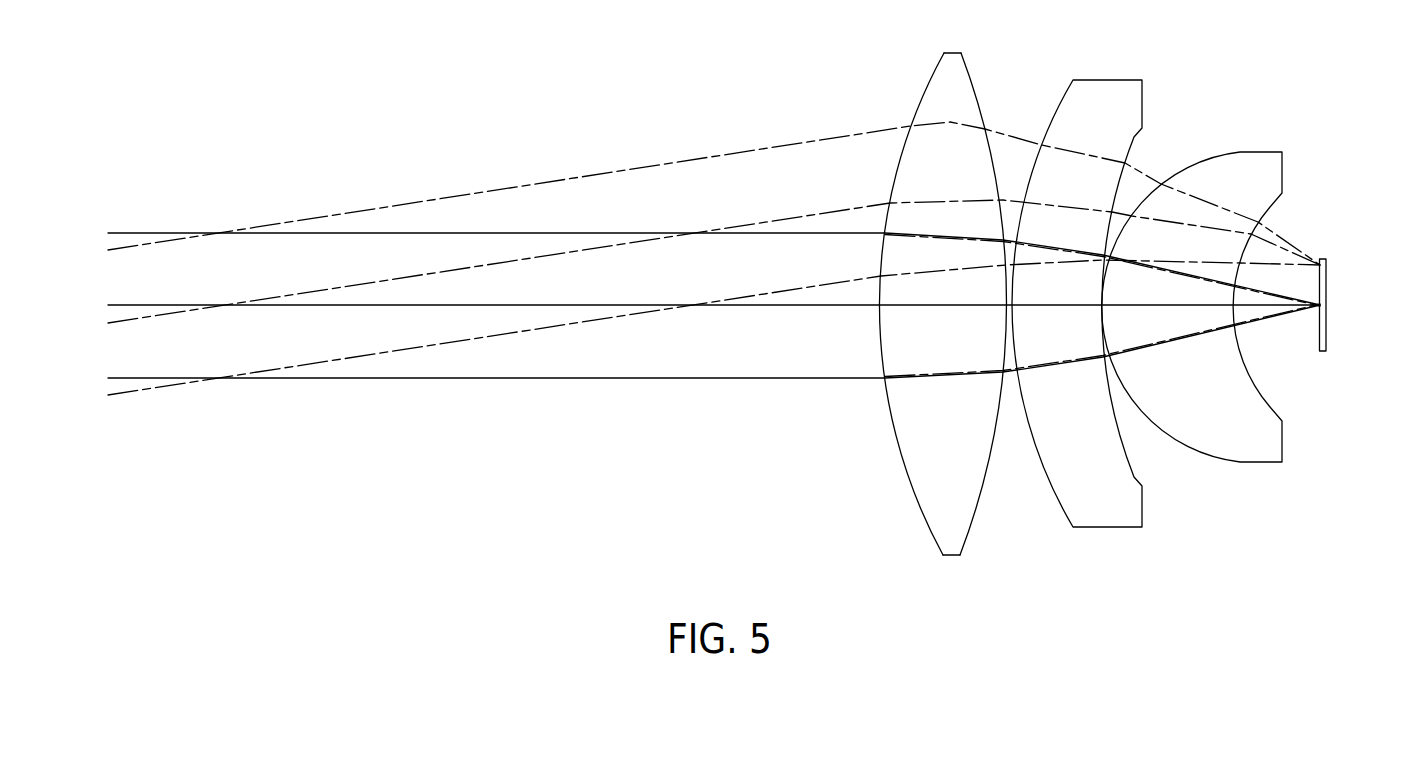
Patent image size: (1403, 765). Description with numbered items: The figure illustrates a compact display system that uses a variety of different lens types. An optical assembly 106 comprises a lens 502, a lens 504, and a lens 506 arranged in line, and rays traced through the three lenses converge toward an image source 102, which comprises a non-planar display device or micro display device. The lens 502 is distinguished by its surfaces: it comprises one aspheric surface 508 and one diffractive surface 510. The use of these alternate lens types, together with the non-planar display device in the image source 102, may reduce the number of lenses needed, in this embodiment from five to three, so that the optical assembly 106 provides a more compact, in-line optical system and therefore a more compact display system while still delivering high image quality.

The image source 102 is at (1327, 340).
The optical assembly 106 is at (1076, 348).
The lens 502 is at (951, 310).
The lens 504 is at (1107, 528).
The lens 506 is at (1192, 334).
The aspheric surface 508 is at (914, 93).
The diffractive surface 510 is at (974, 76).